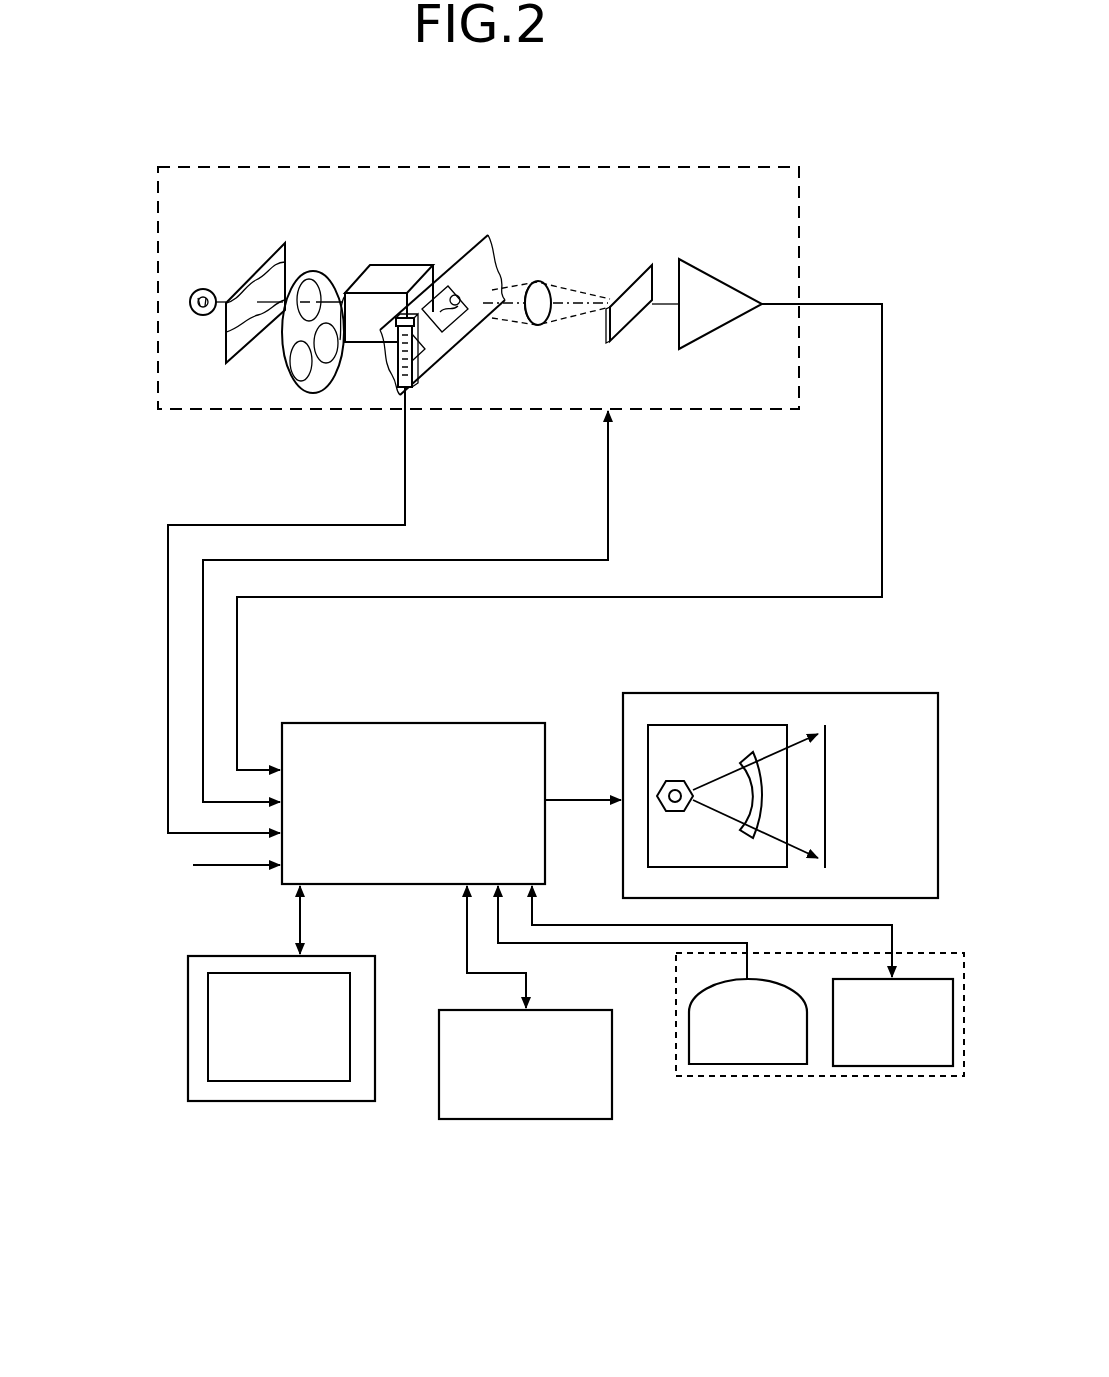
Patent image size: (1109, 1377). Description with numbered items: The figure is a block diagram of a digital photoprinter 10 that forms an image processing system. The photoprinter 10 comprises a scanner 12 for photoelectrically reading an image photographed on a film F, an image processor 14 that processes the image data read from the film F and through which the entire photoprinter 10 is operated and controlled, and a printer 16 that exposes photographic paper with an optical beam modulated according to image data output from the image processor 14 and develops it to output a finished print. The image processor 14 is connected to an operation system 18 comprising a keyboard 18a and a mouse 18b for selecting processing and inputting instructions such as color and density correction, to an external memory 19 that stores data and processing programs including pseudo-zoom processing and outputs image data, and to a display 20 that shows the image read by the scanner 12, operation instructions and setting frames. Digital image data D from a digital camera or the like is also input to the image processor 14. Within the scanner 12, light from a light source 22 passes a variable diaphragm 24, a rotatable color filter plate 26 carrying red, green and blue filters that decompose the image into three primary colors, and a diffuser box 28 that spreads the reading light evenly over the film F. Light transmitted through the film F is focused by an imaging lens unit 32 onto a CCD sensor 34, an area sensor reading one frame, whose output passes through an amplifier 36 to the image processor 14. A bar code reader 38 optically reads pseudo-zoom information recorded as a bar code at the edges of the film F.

The digital photoprinter 10 is at (866, 190).
The scanner 12 is at (222, 412).
The image processor 14 is at (416, 722).
The printer 16 is at (776, 692).
The operation system 18 is at (805, 1080).
The keyboard 18a is at (887, 1066).
The mouse 18b is at (733, 1066).
The external memory 19 is at (527, 1120).
The display 20 is at (275, 1102).
The light source 22 is at (204, 290).
The variable diaphragm 24 is at (262, 262).
The color filter plate 26 is at (312, 272).
The diffuser box 28 is at (386, 290).
The imaging lens unit 32 is at (538, 282).
The CCD sensor 34 is at (611, 290).
The amplifier 36 is at (722, 333).
The bar code reader 38 is at (412, 380).
The film F is at (476, 250).
The digital image data D is at (219, 865).